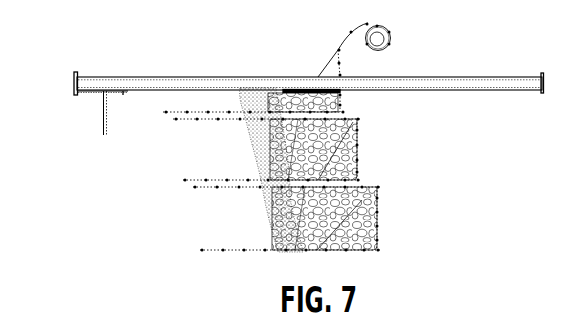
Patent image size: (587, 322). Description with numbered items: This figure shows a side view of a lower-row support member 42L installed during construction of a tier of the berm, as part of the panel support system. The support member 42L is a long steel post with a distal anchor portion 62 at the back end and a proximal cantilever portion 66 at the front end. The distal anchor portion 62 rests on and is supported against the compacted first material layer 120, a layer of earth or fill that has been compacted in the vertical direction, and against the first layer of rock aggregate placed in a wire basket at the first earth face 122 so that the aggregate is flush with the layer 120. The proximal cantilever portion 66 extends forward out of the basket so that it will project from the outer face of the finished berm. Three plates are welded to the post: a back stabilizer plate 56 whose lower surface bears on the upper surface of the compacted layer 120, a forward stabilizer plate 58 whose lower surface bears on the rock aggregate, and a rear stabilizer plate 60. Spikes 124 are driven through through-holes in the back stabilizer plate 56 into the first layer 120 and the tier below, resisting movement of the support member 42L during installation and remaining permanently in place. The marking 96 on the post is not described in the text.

The rear stabilizer plate 60 is at (284, 75).
The support member 42L is at (152, 77).
The distal anchor portion 62 is at (269, 78).
The proximal cantilever portion 66 is at (454, 77).
The break mark 96 is at (159, 84).
The back stabilizer plate 56 is at (125, 92).
The spikes 124 is at (102, 117).
The compacted first material layer 120 is at (243, 98).
The first earth face 122 is at (342, 101).
The forward stabilizer plate 58 is at (317, 93).